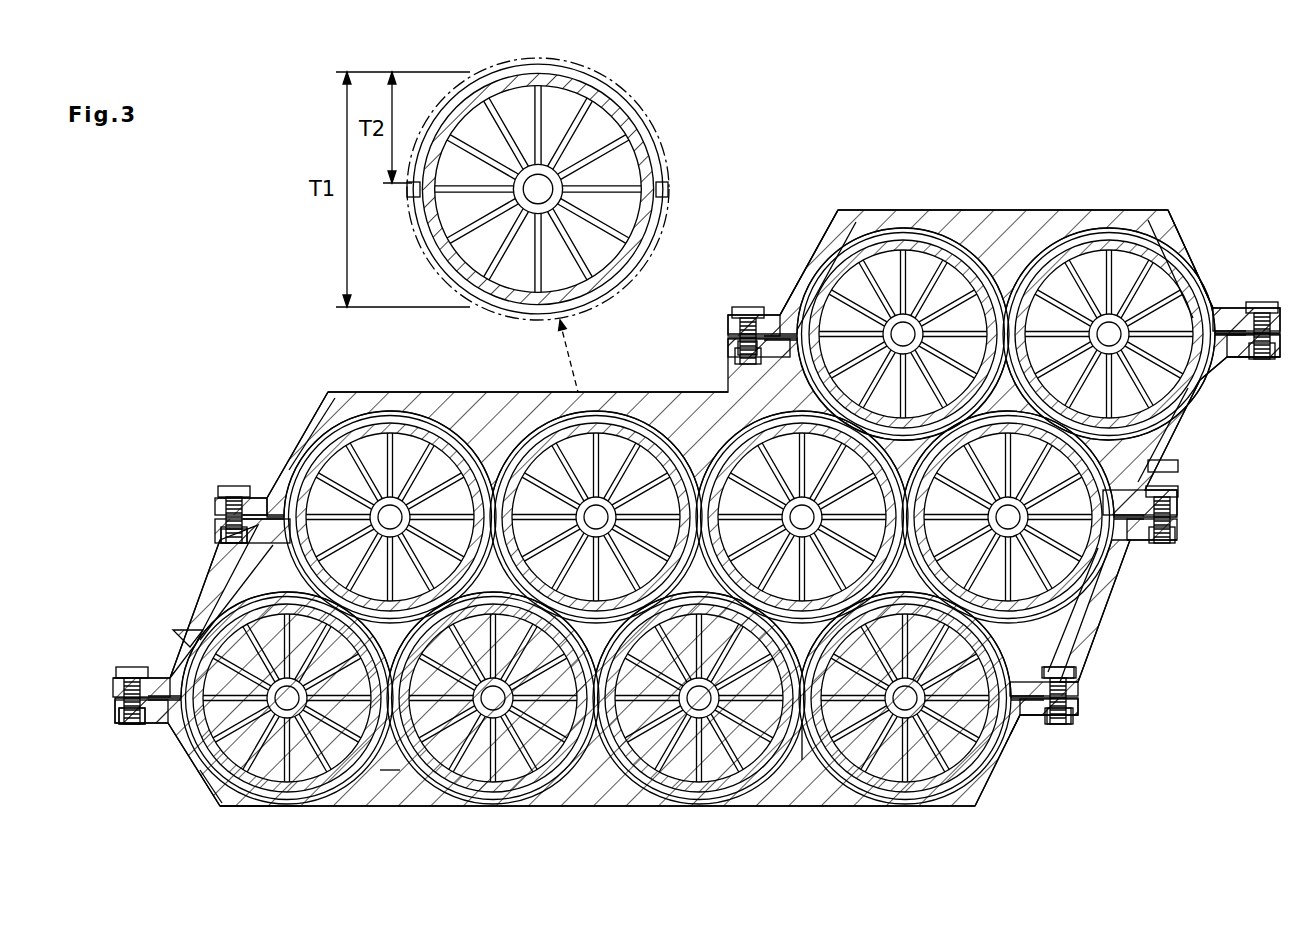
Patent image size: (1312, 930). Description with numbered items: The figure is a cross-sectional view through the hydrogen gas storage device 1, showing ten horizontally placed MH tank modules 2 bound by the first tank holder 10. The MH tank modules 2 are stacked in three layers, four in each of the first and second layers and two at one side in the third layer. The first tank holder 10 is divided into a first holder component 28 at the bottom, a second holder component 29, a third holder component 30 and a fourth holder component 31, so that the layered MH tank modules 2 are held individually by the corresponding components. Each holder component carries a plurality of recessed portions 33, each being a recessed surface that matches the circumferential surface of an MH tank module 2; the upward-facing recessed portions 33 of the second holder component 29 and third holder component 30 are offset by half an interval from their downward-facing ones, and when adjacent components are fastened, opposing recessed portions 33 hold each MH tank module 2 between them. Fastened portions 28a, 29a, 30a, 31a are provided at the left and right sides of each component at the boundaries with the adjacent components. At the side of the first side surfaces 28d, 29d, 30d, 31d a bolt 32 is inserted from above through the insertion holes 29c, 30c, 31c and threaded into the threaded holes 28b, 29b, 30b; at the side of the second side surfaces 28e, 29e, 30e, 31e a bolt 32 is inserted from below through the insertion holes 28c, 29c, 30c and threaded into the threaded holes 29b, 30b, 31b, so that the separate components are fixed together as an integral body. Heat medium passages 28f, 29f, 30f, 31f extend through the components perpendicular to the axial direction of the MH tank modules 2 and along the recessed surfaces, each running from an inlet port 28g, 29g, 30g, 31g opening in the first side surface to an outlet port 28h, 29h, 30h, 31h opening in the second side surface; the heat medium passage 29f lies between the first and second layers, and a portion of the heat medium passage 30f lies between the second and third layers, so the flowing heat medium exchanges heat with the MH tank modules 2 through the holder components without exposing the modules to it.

The hydrogen gas storage device 1 is at (155, 817).
The MH tank module 2 is at (625, 108).
The first tank holder 10 is at (978, 808).
The first holder component 28 is at (930, 808).
The fastened portion 28a is at (140, 718).
The threaded hole 28b is at (175, 725).
The insertion hole 28c is at (1068, 722).
The first side surface 28d is at (190, 757).
The second side surface 28e is at (1018, 733).
The heat medium passage 28f is at (395, 800).
The inlet port 28g is at (205, 790).
The outlet port 28h is at (1000, 773).
The second holder component 29 is at (1105, 603).
The fastened portion 29a is at (213, 527).
The threaded hole 29b is at (218, 541).
The insertion hole 29c is at (140, 672).
The first side surface 29d is at (222, 570).
The second side surface 29e is at (1085, 622).
The heat medium passage 29f is at (804, 775).
The inlet port 29g is at (198, 633).
The outlet port 29h is at (1105, 583).
The third holder component 30 is at (1222, 420).
The fastened portion 30a is at (213, 507).
The threaded hole 30b is at (737, 335).
The insertion hole 30c is at (238, 498).
The first side surface 30d is at (317, 403).
The second side surface 30e is at (1200, 445).
The heat medium passage 30f is at (535, 392).
The inlet port 30g is at (298, 445).
The outlet port 30h is at (1196, 394).
The fourth holder component 31 is at (1177, 214).
The fastened portion 31a is at (780, 326).
The threaded hole 31b is at (1256, 308).
The insertion hole 31c is at (757, 313).
The first side surface 31d is at (828, 226).
The second side surface 31e is at (1217, 273).
The heat medium passage 31f is at (1065, 230).
The inlet port 31g is at (820, 280).
The outlet port 31h is at (1197, 250).
The bolt 32 is at (735, 303).
The recessed portion 33 is at (580, 88).